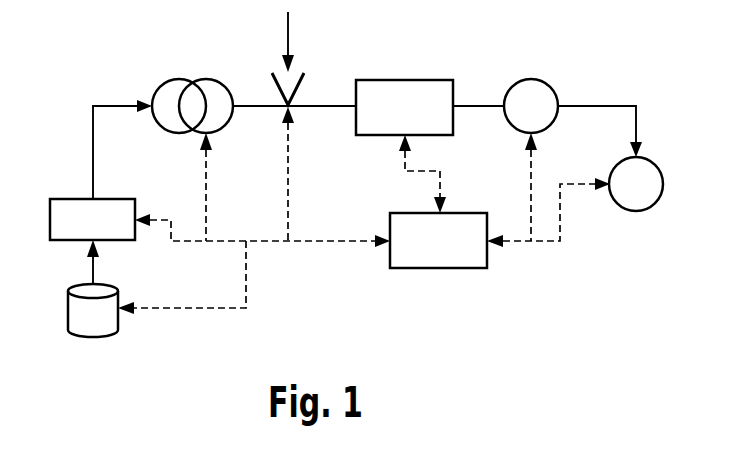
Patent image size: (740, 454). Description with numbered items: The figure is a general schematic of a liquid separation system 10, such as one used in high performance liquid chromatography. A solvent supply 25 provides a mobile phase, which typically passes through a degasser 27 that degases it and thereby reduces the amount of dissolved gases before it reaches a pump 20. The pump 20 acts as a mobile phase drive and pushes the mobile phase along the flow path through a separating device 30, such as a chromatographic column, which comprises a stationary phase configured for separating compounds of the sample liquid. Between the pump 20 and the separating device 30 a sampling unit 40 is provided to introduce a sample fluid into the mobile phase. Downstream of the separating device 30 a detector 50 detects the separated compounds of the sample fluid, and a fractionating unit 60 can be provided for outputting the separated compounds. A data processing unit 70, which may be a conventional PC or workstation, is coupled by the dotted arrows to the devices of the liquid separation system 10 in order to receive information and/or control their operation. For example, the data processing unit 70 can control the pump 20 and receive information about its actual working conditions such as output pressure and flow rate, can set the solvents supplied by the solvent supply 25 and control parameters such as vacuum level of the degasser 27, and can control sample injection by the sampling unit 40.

The liquid separation system 10 is at (551, 316).
The pump 20 is at (193, 91).
The solvent supply 25 is at (68, 313).
The degasser 27 is at (65, 198).
The separating device 30 is at (420, 80).
The sampling unit 40 is at (303, 73).
The detector 50 is at (547, 84).
The fractionating unit 60 is at (657, 164).
The data processing unit 70 is at (432, 268).